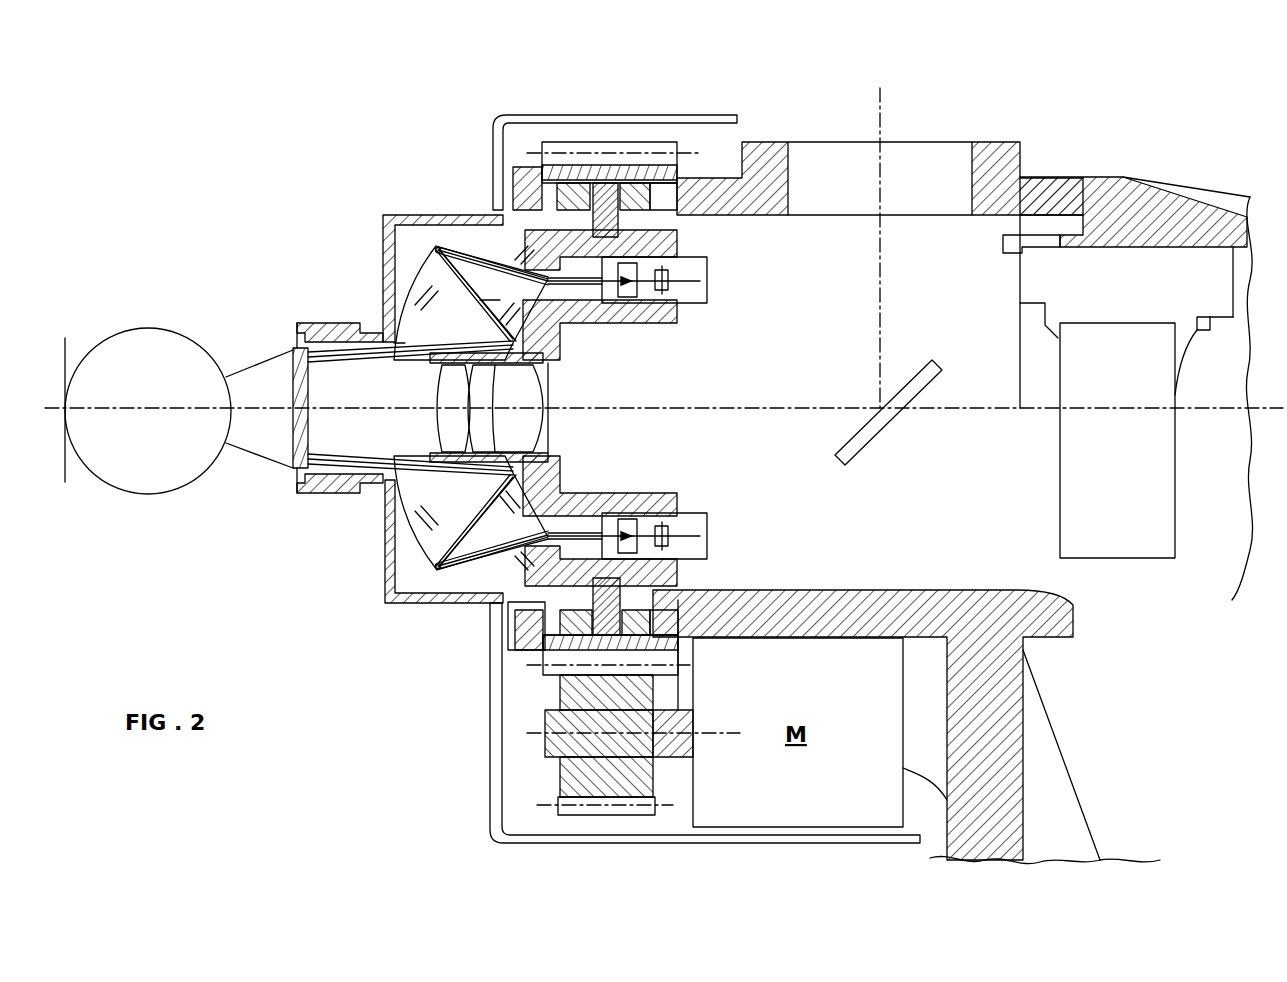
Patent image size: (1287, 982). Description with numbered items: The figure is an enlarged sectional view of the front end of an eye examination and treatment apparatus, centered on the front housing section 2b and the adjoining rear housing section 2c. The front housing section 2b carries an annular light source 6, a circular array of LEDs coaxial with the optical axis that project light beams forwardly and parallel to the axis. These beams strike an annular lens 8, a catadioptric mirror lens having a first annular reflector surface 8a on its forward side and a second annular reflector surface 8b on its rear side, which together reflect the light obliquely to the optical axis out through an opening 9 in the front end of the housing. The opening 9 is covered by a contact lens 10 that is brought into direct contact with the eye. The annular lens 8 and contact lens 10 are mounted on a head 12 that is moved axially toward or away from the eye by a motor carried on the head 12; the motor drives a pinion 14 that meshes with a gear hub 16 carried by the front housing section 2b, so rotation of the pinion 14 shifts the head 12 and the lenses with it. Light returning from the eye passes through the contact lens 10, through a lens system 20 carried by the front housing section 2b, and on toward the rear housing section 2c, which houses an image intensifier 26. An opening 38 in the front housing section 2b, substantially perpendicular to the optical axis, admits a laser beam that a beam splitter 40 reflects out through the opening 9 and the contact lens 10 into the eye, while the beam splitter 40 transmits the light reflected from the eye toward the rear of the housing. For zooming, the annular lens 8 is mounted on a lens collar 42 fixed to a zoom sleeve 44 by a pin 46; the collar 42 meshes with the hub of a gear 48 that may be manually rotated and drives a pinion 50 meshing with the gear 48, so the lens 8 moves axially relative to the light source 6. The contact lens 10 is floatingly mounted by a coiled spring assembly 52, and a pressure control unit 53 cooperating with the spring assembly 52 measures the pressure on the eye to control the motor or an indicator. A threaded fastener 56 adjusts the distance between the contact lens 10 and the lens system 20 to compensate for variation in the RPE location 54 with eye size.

The front housing section 2b is at (1003, 140).
The rear housing section 2c is at (1167, 187).
The annular light source 6 is at (683, 265).
The annular lens 8 is at (433, 220).
The first annular reflector surface 8a is at (437, 247).
The second annular reflector surface 8b is at (497, 300).
The opening 9 is at (287, 452).
The contact lens 10 is at (275, 370).
The head 12 is at (508, 638).
The pinion 14 is at (588, 778).
The gear hub 16 is at (563, 645).
The lens system 20 is at (458, 398).
The image intensifier 26 is at (1073, 273).
The opening 38 is at (935, 198).
The beam splitter 40 is at (870, 435).
The lens collar 42 is at (528, 165).
The zoom sleeve 44 is at (660, 185).
The pin 46 is at (615, 172).
The gear 48 is at (637, 180).
The pinion 50 is at (513, 170).
The coiled spring assembly 52 is at (372, 320).
The pressure control unit 53 is at (373, 505).
The RPE location 54 is at (63, 458).
The threaded fastener 56 is at (312, 327).